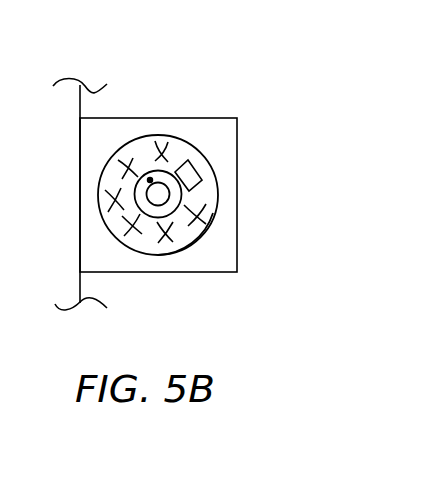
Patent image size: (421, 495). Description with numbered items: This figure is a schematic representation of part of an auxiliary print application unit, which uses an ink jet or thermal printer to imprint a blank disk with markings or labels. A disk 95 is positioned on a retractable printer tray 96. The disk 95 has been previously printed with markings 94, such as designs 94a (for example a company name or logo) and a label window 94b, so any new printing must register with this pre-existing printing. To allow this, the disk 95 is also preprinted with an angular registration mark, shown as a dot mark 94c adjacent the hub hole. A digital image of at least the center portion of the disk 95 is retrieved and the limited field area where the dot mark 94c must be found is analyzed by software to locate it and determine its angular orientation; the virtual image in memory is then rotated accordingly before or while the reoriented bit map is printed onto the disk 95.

The markings 94 is at (112, 226).
The designs 94a is at (157, 147).
The label window 94b is at (200, 173).
The dot mark 94c is at (150, 179).
The disk 95 is at (213, 213).
The retractable printer tray 96 is at (183, 273).